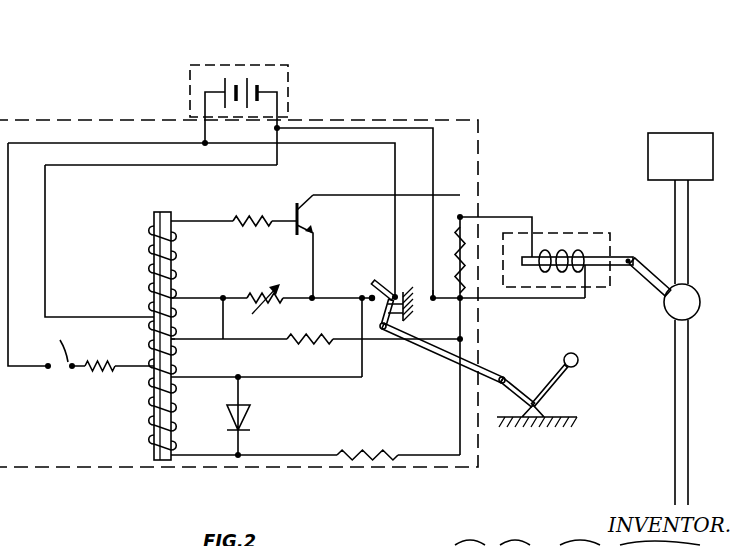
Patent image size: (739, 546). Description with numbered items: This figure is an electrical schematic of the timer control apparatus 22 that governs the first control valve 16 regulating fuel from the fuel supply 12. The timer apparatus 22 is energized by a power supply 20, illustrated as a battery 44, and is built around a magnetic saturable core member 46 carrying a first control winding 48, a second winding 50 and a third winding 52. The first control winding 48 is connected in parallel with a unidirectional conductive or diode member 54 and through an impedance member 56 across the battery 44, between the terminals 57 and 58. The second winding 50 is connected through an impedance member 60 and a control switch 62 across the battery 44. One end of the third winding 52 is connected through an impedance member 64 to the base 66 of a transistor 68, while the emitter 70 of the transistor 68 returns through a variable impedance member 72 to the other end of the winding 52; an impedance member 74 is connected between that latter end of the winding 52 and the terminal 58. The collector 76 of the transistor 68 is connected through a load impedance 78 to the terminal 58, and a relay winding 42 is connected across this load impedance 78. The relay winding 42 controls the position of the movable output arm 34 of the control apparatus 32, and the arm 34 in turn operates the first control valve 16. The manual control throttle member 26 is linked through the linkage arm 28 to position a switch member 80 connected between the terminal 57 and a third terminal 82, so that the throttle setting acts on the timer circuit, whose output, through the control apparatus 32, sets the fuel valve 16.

The fuel supply 12 is at (672, 133).
The first control valve 16 is at (701, 302).
The electrical power supply 20 is at (340, 78).
The first timer control apparatus 22 is at (482, 160).
The manual control throttle member 26 is at (579, 360).
The linkage arm 28 is at (382, 331).
The control apparatus 32 is at (605, 292).
The movable output arm 34 is at (624, 256).
The relay winding 42 is at (563, 251).
The battery 44 is at (228, 80).
The magnetic saturable core member 46 is at (166, 214).
The first control winding 48 is at (149, 424).
The second winding 50 is at (174, 343).
The third winding 52 is at (149, 272).
The unidirectional conductive or diode member 54 is at (251, 405).
The impedance member 56 is at (350, 455).
The terminal 57 is at (398, 292).
The terminal 58 is at (434, 303).
The impedance member 60 is at (100, 374).
The control switch 62 is at (64, 350).
The impedance member 64 is at (238, 218).
The base 66 is at (305, 233).
The transistor 68 is at (292, 238).
The emitter 70 is at (312, 228).
The variable impedance member 72 is at (272, 310).
The impedance member 74 is at (316, 344).
The collector 76 is at (307, 200).
The load impedance 78 is at (455, 244).
The switch member 80 is at (380, 283).
The third terminal 82 is at (370, 295).